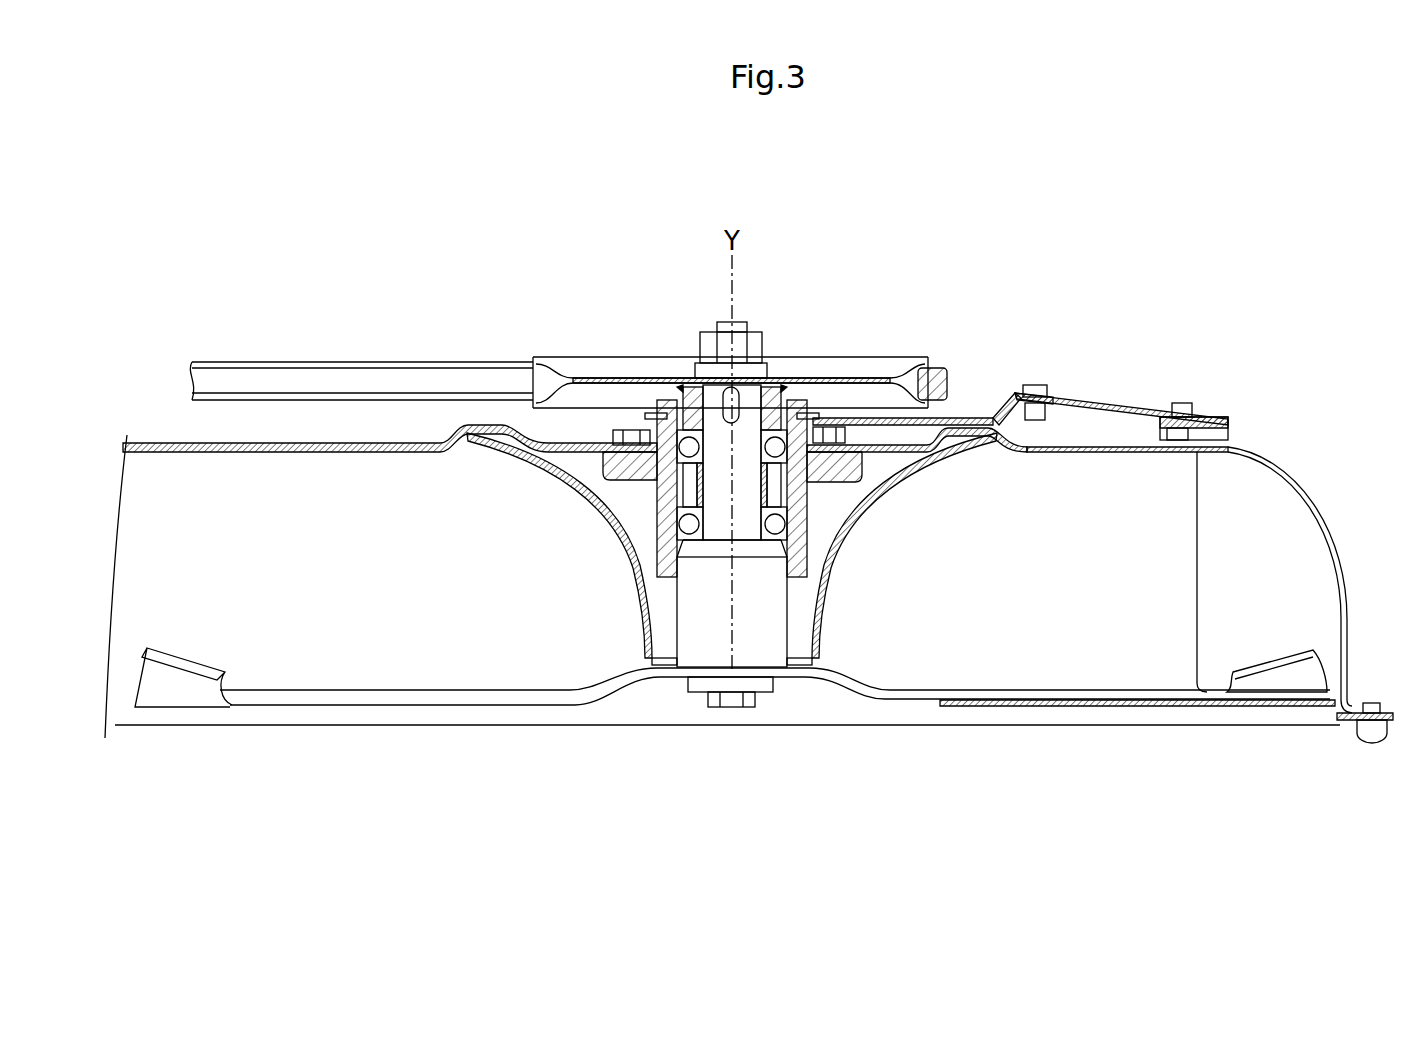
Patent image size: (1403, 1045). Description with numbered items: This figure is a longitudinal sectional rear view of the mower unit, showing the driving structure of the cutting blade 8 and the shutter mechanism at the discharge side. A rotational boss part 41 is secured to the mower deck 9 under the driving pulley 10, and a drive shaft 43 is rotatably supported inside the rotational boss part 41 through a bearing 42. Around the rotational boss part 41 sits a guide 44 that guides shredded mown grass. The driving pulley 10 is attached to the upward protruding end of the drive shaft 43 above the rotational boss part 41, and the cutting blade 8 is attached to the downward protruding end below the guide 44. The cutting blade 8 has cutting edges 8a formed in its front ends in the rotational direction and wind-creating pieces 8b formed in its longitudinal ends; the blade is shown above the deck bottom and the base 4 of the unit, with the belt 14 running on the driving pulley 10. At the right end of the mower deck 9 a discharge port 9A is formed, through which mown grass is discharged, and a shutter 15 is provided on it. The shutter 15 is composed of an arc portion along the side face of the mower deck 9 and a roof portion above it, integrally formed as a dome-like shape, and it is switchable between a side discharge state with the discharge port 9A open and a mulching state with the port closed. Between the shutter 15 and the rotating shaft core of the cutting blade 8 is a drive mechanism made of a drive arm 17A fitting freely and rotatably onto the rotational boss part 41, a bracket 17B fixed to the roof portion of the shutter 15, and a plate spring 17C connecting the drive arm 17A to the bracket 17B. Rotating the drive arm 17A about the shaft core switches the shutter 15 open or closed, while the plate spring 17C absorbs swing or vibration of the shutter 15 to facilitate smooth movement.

The mower deck 4 is at (362, 728).
The cutting blade 8 is at (474, 690).
The cutting edges 8a is at (1123, 703).
The wind-creating pieces 8b is at (177, 678).
The mower deck 9 is at (322, 443).
The discharge port 9A is at (1250, 504).
The driving pulley 10 is at (617, 377).
The belt 14 is at (940, 367).
The shutter 15 is at (1343, 538).
The drive arm 17A is at (997, 413).
The bracket 17B is at (1240, 435).
The plate spring 17C is at (1107, 403).
The rotational boss part 41 is at (807, 490).
The bearing 42 is at (680, 524).
The drive shaft 43 is at (777, 630).
The guide 44 is at (958, 452).